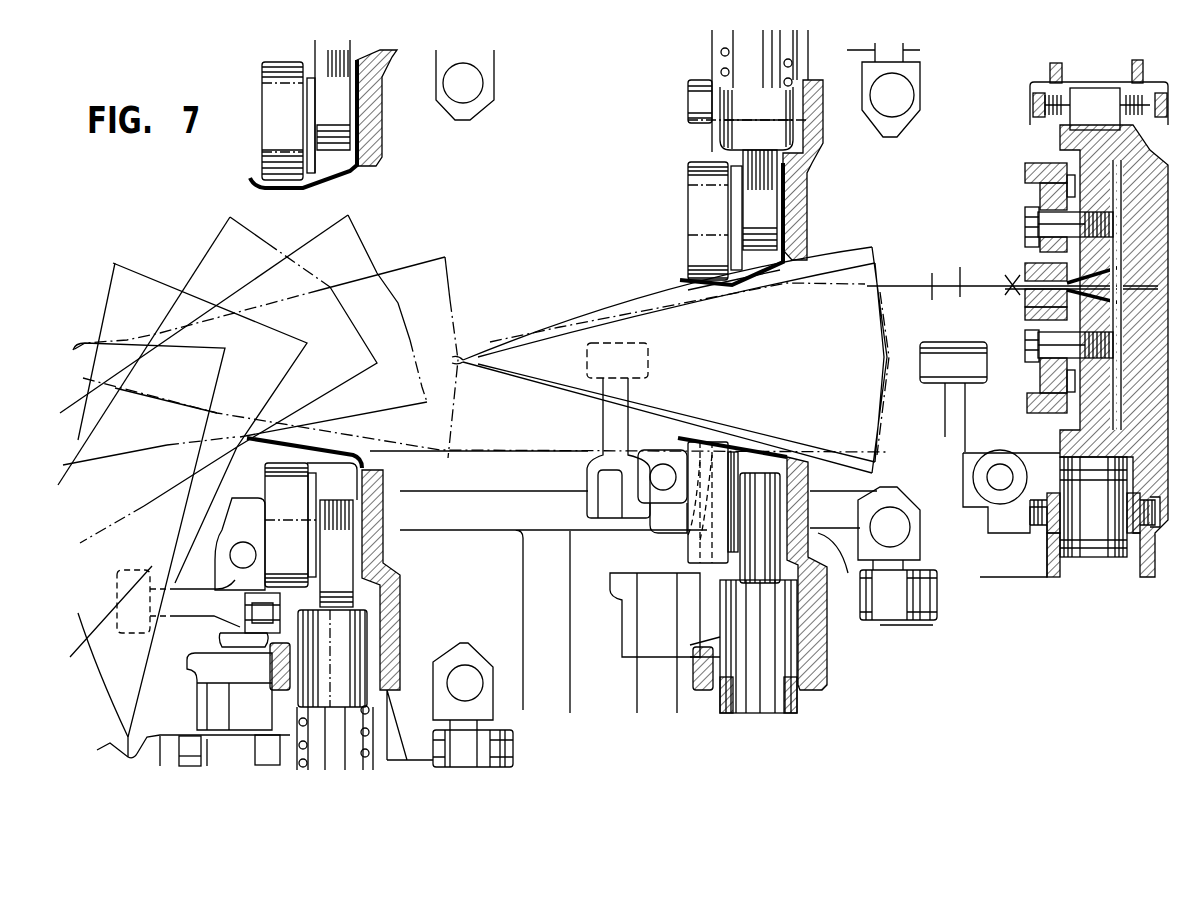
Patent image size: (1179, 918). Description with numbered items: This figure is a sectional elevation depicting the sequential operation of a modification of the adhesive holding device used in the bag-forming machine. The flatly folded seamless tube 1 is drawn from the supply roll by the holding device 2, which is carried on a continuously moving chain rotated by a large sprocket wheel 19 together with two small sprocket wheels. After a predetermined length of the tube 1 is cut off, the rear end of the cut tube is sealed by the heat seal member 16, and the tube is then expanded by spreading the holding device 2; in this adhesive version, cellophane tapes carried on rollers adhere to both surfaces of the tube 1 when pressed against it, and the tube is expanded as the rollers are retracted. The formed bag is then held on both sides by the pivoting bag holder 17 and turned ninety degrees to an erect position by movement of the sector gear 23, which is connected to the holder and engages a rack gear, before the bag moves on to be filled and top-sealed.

The flatly folded seamless tube 1 is at (960, 282).
The holding device 2 is at (1048, 190).
The heat seal member 16 is at (452, 110).
The bag holder 17 is at (926, 342).
The large sprocket wheel 19 is at (338, 180).
The sector gear 23 is at (237, 503).